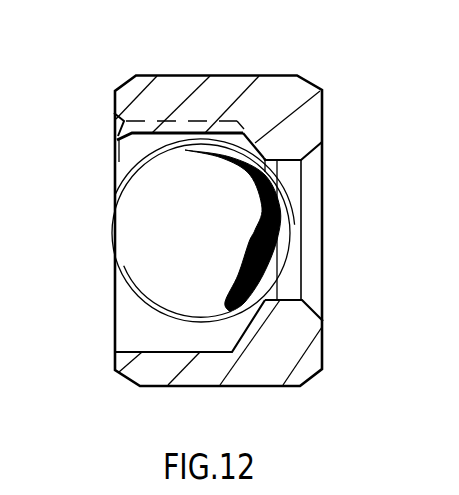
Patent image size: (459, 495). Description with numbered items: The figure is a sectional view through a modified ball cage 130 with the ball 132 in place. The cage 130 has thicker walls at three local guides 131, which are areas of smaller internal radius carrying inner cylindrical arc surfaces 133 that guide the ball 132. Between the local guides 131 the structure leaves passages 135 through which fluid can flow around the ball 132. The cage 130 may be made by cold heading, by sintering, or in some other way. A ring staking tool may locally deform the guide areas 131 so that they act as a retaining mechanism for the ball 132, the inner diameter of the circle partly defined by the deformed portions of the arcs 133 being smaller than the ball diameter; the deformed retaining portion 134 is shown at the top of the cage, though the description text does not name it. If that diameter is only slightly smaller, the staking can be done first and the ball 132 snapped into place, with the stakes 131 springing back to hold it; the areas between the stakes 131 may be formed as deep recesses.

The ball cage 130 is at (212, 60).
The guide 131 is at (114, 168).
The ball 132 is at (206, 250).
The inner cylindrical arc surface 133 is at (151, 134).
The retaining lip 134 is at (114, 137).
The passage 135 is at (154, 337).